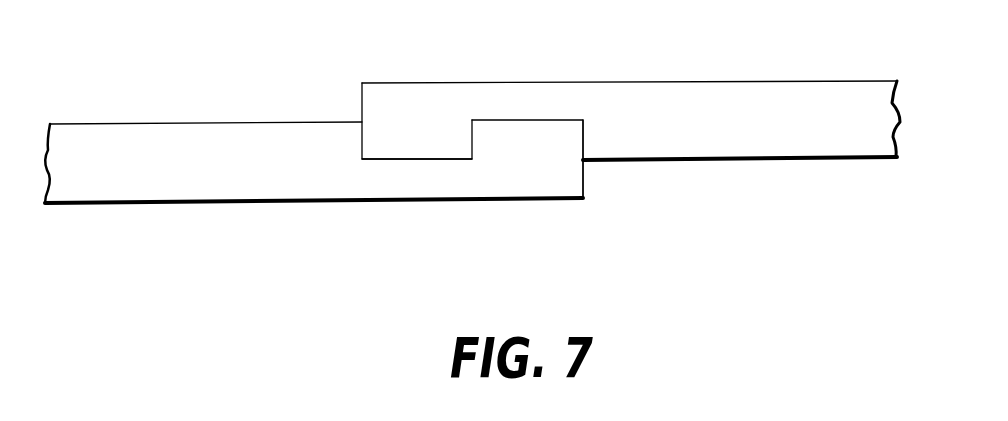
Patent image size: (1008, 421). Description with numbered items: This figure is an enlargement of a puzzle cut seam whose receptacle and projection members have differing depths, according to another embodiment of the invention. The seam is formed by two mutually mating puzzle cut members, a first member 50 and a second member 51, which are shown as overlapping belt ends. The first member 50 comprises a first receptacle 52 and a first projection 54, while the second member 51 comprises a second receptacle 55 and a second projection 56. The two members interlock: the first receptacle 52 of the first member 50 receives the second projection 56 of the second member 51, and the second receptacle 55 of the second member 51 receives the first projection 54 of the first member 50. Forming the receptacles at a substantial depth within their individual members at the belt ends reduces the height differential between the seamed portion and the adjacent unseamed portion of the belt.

The first member 50 is at (758, 117).
The second member 51 is at (197, 160).
The first receptacle 52 is at (533, 120).
The first projection 54 is at (405, 125).
The second receptacle 55 is at (422, 160).
The second projection 56 is at (585, 180).